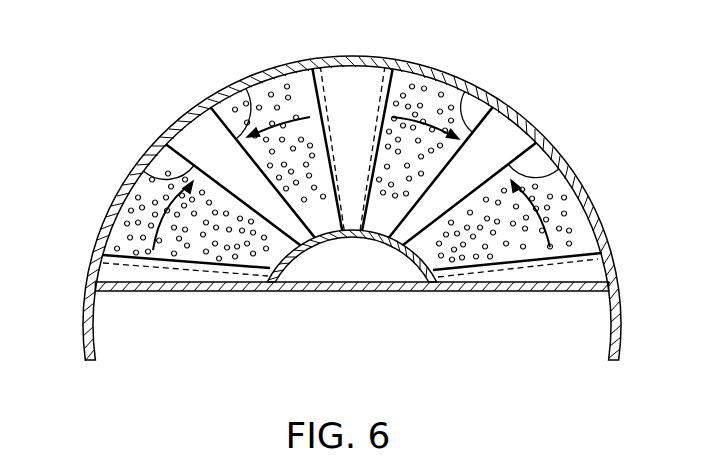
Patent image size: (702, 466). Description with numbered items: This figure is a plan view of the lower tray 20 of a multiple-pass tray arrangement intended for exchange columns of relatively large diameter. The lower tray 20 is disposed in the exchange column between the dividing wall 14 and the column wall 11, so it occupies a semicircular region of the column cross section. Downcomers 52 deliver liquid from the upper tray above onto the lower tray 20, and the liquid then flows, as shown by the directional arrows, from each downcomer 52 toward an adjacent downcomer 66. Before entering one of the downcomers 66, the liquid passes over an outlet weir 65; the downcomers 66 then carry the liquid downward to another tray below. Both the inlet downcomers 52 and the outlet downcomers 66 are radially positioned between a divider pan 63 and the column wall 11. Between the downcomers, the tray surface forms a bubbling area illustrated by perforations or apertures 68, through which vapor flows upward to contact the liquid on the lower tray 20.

The column wall 11 is at (100, 222).
The dividing wall 14 is at (213, 292).
The lower tray 20 is at (627, 188).
The downcomers 52 is at (358, 106).
The divider pan 63 is at (323, 280).
The outlet weir 65 is at (140, 169).
The downcomers 66 is at (205, 150).
The perforations or apertures 68 is at (575, 237).